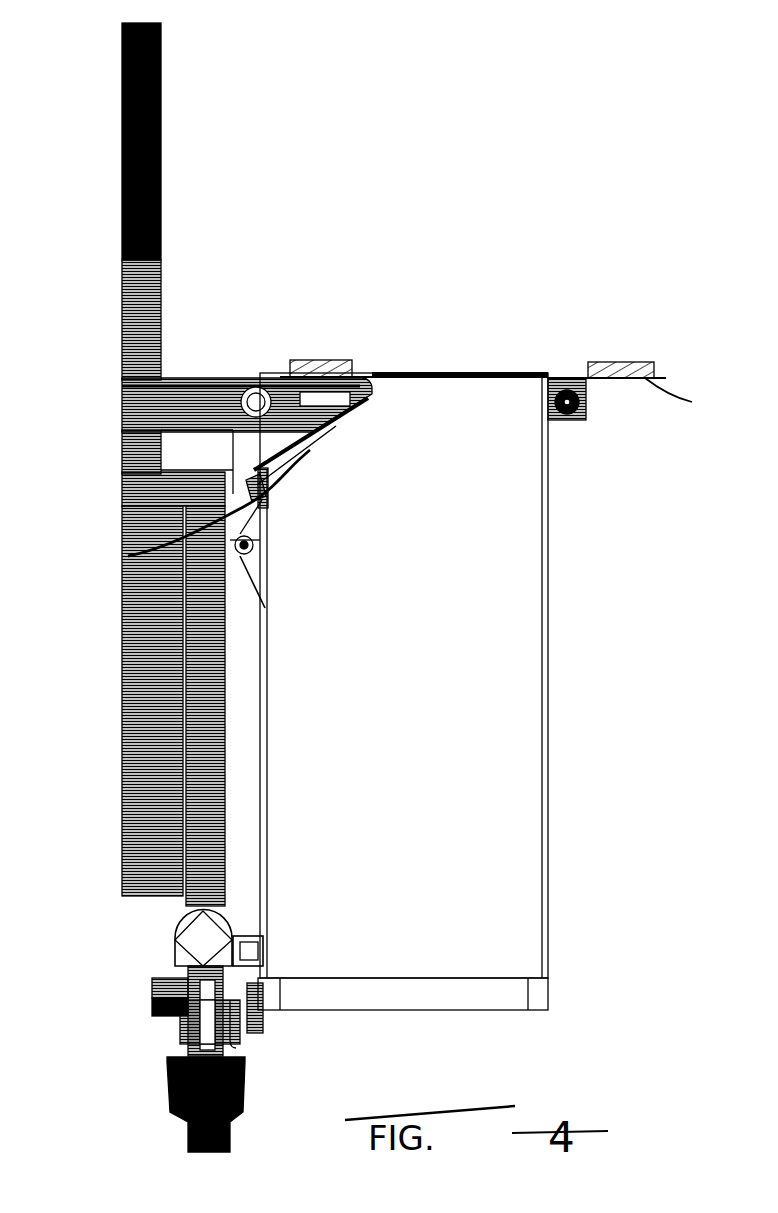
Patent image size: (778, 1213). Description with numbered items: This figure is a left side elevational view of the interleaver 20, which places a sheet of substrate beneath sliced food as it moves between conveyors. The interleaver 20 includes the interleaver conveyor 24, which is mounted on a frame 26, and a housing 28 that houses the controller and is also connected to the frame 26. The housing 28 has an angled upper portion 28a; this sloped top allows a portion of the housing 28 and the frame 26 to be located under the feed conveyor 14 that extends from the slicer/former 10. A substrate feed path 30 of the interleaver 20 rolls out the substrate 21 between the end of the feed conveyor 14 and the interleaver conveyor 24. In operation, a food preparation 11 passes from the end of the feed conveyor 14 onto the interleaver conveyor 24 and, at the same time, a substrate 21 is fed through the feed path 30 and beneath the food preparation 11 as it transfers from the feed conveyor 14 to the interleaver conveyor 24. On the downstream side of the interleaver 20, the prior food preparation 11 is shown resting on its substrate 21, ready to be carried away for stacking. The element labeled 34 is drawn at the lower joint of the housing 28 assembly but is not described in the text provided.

The slicer/former 10 is at (170, 208).
The feed conveyor 14 is at (215, 378).
The food preparation 11 is at (318, 362).
The substrate 21 is at (688, 398).
The interleaver 20 is at (518, 364).
The interleaver conveyor 24 is at (553, 378).
The frame 26 is at (550, 997).
The housing 28 is at (548, 783).
The angled upper portion 28a is at (128, 556).
The substrate feed path 30 is at (372, 366).
The pivot joint 34 is at (180, 958).